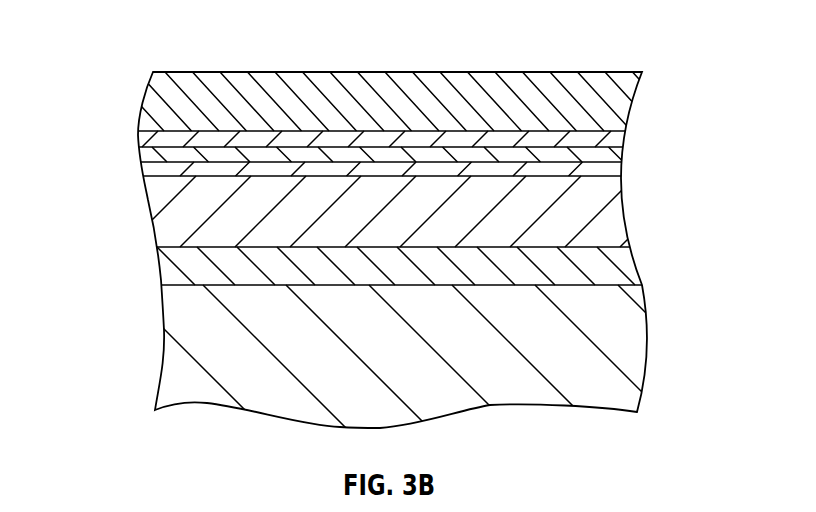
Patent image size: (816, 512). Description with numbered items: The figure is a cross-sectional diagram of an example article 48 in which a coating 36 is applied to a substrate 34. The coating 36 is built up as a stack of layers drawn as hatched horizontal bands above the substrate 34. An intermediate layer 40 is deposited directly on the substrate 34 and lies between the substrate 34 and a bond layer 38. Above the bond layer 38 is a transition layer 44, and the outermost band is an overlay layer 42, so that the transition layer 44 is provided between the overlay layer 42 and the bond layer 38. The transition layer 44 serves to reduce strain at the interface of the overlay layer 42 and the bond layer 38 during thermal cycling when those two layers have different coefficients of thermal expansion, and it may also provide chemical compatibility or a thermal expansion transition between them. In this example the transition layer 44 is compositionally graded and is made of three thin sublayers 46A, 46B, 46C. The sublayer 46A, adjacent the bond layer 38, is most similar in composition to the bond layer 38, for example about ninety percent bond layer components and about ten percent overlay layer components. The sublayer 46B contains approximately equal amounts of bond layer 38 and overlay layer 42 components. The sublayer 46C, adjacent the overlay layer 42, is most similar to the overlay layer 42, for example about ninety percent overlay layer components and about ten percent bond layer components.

The article 48 is at (578, 26).
The coating 36 is at (387, 171).
The overlay layer 42 is at (153, 103).
The transition layer 44 is at (343, 146).
The sublayer 46C is at (145, 138).
The sublayer 46B is at (145, 157).
The sublayer 46A is at (148, 168).
The bond layer 38 is at (168, 215).
The intermediate layer 40 is at (167, 270).
The substrate 34 is at (177, 327).